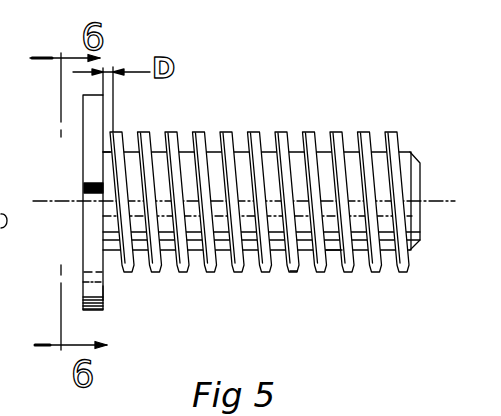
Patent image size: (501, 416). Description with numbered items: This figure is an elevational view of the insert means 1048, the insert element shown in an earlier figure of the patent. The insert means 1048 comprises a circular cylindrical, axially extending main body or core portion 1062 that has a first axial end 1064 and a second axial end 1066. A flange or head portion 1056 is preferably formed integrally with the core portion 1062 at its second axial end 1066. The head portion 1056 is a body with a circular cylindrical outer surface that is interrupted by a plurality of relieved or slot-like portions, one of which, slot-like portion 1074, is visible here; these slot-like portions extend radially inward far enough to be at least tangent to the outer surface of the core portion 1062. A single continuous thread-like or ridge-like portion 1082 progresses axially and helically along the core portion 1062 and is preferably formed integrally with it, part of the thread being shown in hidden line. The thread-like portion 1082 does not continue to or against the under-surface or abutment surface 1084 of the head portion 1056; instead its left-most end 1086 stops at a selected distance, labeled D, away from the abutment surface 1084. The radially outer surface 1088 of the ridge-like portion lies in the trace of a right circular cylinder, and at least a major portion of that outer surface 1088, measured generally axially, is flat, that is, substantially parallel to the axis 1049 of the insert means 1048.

The insert means 1048 is at (288, 81).
The radially outer surface 1088 is at (389, 132).
The first axial end 1064 is at (421, 163).
The axis 1049 is at (442, 203).
The core portion 1062 is at (332, 252).
The thread-like portion 1082 is at (298, 266).
The second axial end 1066 is at (107, 252).
The abutment surface 1084 is at (105, 293).
The head portion 1056 is at (90, 311).
The slot-like portion 1074 is at (88, 197).
The end of thread-like portion 1086 is at (110, 140).